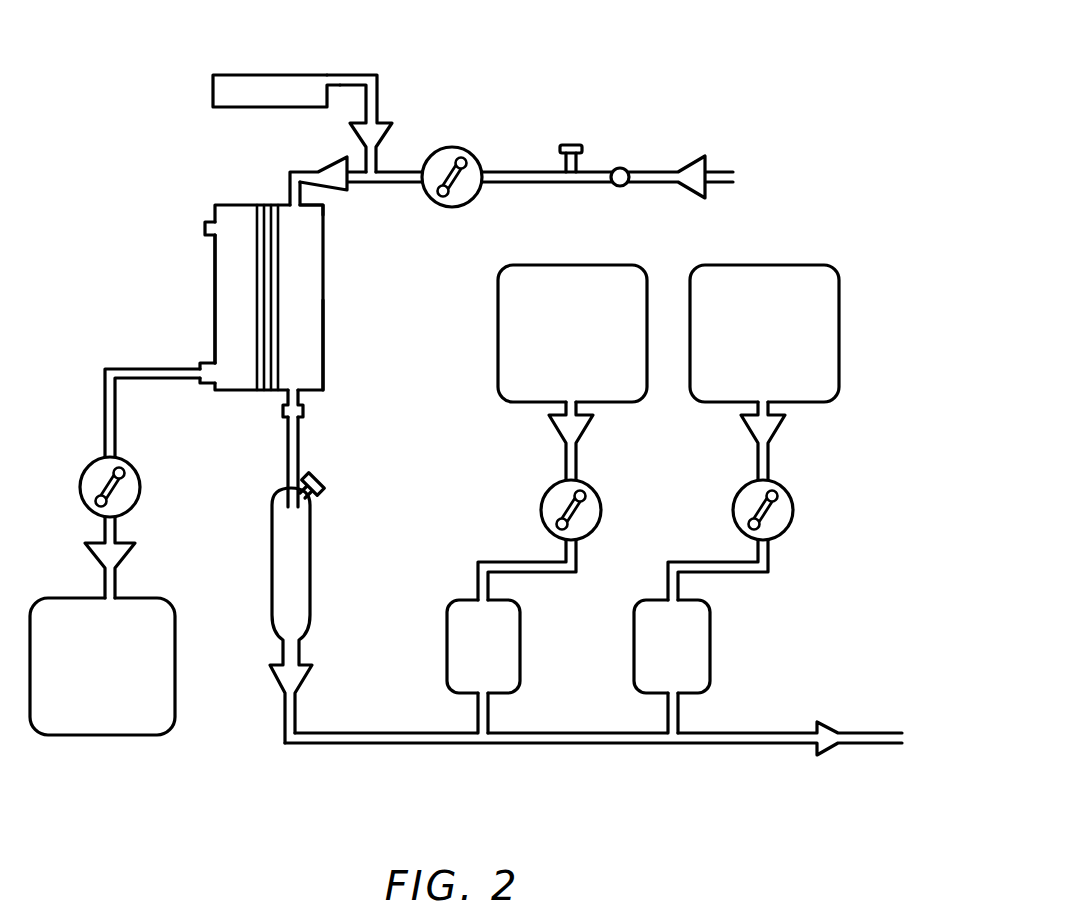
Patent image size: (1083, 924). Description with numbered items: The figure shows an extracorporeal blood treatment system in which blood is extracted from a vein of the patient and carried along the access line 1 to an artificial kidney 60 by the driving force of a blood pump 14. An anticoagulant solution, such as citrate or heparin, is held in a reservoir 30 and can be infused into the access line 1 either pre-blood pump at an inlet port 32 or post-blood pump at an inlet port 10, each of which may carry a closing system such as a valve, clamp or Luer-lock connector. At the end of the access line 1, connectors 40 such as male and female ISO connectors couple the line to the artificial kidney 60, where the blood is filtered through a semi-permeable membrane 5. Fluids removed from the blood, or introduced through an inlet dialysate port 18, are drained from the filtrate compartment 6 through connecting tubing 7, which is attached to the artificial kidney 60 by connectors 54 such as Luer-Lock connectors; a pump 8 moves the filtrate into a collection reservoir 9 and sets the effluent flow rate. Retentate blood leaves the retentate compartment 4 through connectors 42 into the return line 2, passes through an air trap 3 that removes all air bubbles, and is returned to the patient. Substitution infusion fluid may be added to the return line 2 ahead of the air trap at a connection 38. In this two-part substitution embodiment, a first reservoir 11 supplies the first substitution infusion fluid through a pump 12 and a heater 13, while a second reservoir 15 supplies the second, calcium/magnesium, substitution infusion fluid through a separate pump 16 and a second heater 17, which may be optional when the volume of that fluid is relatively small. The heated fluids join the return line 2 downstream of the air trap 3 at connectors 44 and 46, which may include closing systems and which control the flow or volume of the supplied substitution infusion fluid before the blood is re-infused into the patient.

The access line 1 is at (311, 171).
The return line 2 is at (288, 457).
The air trap 3 is at (272, 588).
The retentate compartment 4 is at (325, 292).
The semi-permeable membrane 5 is at (268, 205).
The filtrate compartment 6 is at (214, 294).
The connecting tubing 7 is at (104, 407).
The pump 8 is at (140, 489).
The collection reservoir 9 is at (157, 598).
The inlet port 10 is at (376, 170).
The reservoir 11 is at (498, 283).
The pump 12 is at (541, 502).
The heater 13 is at (458, 597).
The blood pump 14 is at (460, 147).
The reservoir 15 is at (692, 282).
The pump 16 is at (733, 502).
The heater 17 is at (650, 597).
The inlet dialysate port 18 is at (204, 226).
The reservoir 30 is at (268, 75).
The inlet port 32 is at (570, 144).
The connection 38 is at (320, 475).
The connectors 40 is at (305, 194).
The connectors 42 is at (304, 409).
The connector 44 is at (483, 745).
The connector 46 is at (671, 745).
The connectors 54 is at (207, 386).
The artificial kidney 60 is at (325, 355).